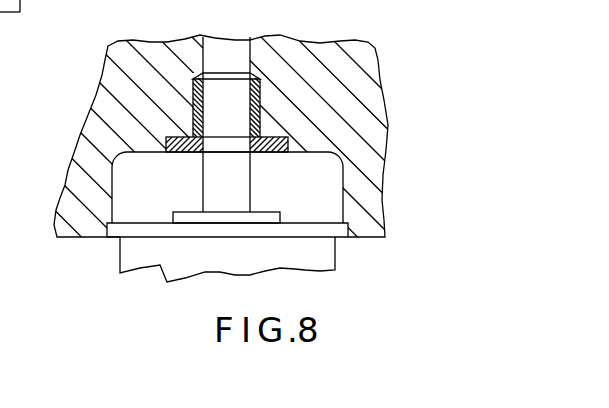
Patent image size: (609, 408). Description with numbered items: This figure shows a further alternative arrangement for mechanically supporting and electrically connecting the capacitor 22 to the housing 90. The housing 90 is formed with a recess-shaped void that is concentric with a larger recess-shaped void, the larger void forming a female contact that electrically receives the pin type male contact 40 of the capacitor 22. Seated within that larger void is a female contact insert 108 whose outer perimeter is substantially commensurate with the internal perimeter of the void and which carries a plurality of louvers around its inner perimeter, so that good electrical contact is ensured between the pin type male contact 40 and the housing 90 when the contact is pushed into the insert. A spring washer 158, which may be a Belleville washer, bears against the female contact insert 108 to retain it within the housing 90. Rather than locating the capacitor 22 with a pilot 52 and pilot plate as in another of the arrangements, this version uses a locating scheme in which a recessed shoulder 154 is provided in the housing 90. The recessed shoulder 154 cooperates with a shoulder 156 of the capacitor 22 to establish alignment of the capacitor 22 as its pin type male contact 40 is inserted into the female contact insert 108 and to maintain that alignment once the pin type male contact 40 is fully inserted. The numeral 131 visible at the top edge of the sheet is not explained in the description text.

The housing 90 is at (376, 66).
The female contact insert 108 is at (260, 88).
The spring washer 158 is at (288, 148).
The pin type male contact 40 is at (235, 172).
The pilot 52 is at (283, 213).
The recessed shoulder 154 is at (350, 229).
The shoulder 156 is at (113, 238).
The capacitor 22 is at (164, 283).
The reference label 131 is at (131, 5).